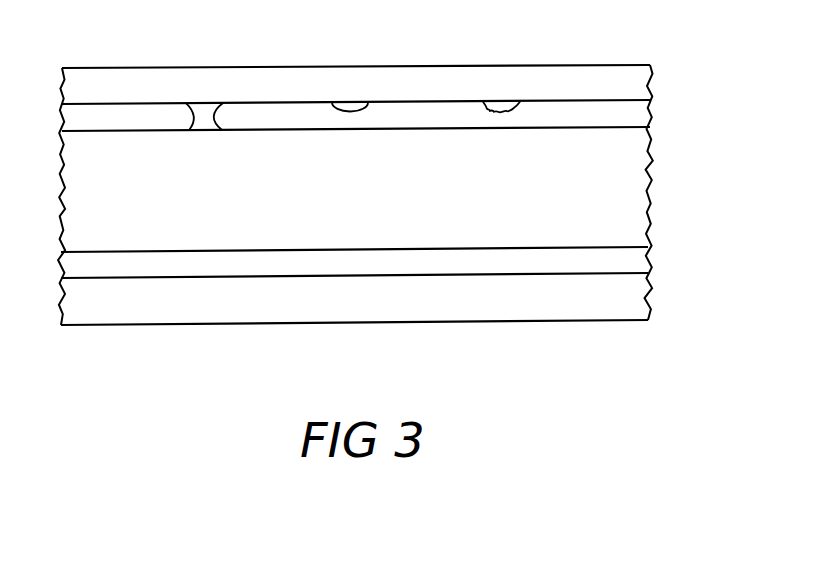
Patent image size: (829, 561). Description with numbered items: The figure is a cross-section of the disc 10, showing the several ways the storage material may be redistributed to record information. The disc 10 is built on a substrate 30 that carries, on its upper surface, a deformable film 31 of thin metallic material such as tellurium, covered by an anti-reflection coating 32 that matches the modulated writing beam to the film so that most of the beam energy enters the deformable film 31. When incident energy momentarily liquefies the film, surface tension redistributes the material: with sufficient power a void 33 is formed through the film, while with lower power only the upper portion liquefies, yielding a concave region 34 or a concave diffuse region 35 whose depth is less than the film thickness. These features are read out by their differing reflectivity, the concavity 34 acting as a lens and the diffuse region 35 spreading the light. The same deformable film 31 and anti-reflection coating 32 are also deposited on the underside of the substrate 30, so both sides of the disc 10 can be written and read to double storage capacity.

The disc 10 is at (425, 373).
The substrate 30 is at (378, 237).
The deformable film 31 is at (657, 108).
The anti-reflection coating 32 is at (655, 70).
The void 33 is at (203, 119).
The concave region 34 is at (353, 114).
The concave diffuse region 35 is at (507, 114).